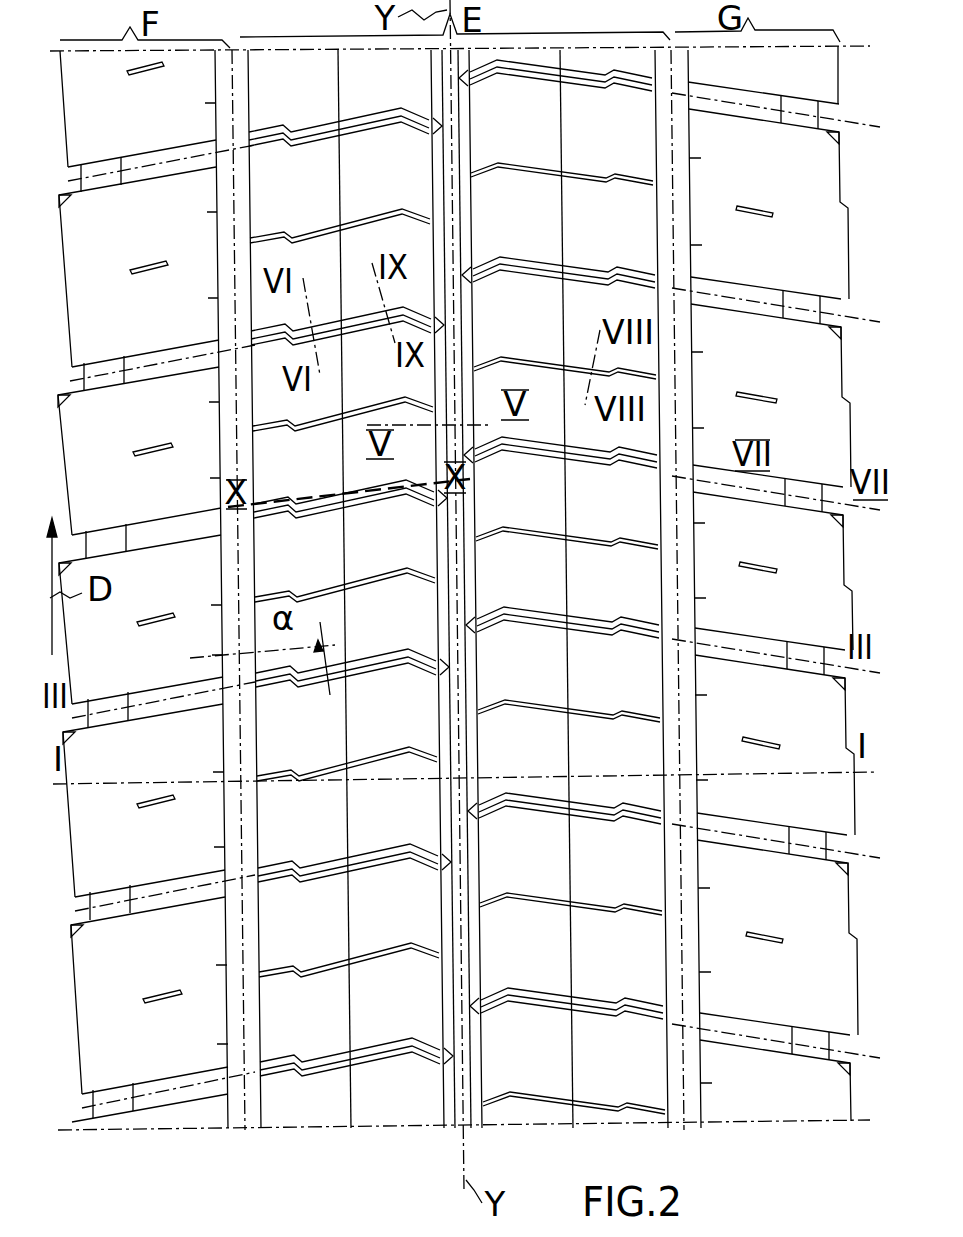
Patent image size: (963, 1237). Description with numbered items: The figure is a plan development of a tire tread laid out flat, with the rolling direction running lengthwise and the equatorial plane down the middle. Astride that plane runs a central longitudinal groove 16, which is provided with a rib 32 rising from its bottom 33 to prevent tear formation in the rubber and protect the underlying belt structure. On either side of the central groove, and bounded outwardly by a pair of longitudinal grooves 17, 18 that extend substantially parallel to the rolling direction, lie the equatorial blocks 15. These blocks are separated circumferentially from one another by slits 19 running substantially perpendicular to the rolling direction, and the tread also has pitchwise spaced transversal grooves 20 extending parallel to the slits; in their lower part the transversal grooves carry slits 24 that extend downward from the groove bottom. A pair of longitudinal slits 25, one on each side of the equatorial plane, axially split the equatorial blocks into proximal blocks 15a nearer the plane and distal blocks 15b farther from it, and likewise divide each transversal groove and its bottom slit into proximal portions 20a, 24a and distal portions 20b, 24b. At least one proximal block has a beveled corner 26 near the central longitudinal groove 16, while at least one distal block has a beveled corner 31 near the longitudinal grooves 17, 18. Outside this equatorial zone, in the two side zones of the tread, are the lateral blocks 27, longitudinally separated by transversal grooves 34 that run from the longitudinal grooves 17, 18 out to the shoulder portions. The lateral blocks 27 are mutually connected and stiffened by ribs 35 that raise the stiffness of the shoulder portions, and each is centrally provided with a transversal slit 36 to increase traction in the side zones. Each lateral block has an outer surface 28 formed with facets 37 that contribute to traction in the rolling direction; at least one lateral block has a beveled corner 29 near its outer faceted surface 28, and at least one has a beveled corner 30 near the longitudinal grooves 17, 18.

The equatorial blocks 15 is at (300, 1128).
The proximal blocks 15a is at (370, 738).
The distal blocks 15b is at (282, 826).
The longitudinal groove 16 is at (447, 1125).
The longitudinal groove 17 is at (222, 584).
The longitudinal groove 18 is at (656, 584).
The slits 19 is at (308, 590).
The transversal grooves 20 is at (310, 498).
The proximal portion of transversal groove 20a is at (545, 803).
The distal portion of transversal groove 20b is at (598, 830).
The slits 24 is at (590, 640).
The proximal portion of slit 24a is at (525, 810).
The distal portion of slit 24b is at (640, 810).
The longitudinal slits 25 is at (345, 172).
The beveled corner 26 is at (430, 880).
The lateral blocks 27 is at (126, 426).
The outer surface 28 is at (70, 420).
The beveled corner 29 is at (65, 178).
The beveled corner 30 is at (245, 186).
The beveled corner 31 is at (250, 425).
The rib 32 is at (455, 575).
The bottom 33 is at (445, 1012).
The transversal grooves 34 is at (150, 345).
The ribs 35 is at (92, 195).
The transversal slit 36 is at (155, 625).
The facets 37 is at (70, 478).